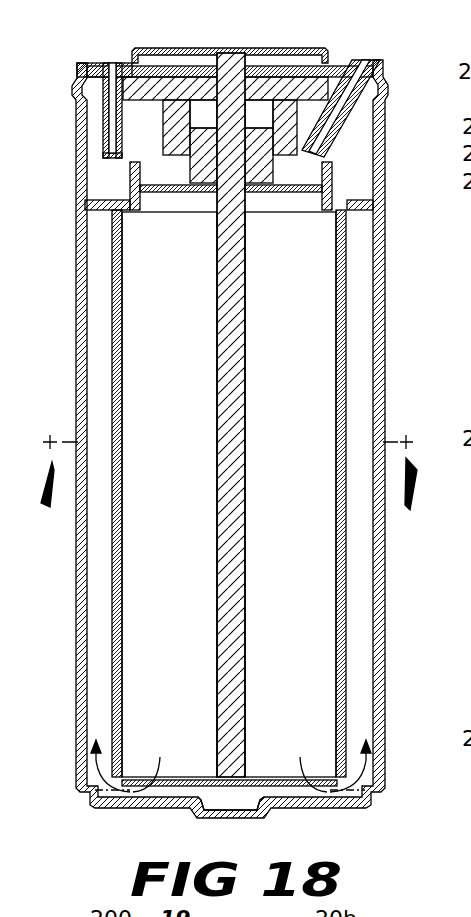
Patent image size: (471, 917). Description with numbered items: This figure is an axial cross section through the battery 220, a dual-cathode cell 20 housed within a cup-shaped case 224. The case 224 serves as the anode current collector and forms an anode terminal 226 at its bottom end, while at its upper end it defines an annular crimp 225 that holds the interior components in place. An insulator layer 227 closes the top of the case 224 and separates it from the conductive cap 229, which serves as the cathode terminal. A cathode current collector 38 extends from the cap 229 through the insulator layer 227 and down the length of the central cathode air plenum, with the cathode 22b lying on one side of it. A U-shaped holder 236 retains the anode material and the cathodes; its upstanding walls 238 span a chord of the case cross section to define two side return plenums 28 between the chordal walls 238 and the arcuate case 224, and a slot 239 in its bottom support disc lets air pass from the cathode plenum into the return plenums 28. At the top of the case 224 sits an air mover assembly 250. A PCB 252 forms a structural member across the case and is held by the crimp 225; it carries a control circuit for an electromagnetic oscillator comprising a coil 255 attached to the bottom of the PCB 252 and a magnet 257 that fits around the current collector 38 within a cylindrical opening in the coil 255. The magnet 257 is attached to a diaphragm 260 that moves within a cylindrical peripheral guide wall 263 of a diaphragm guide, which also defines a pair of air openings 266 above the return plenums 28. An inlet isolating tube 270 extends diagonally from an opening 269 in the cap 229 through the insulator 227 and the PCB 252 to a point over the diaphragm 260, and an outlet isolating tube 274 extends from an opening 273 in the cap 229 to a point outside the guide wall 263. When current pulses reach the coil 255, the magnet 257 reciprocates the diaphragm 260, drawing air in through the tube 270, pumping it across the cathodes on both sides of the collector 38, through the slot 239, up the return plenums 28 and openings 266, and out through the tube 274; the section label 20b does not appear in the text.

The battery 220 is at (432, 30).
The case 224 is at (383, 648).
The annular crimp 225 is at (80, 94).
The anode terminal 226 is at (250, 815).
The insulator layer 227 is at (385, 76).
The conductive cap 229 is at (318, 47).
The U-shaped holder 236 is at (108, 635).
The upstanding walls 238 is at (112, 695).
The slot 239 is at (178, 782).
The air mover assembly 250 is at (358, 160).
The PCB 252 is at (190, 76).
The coil 255 is at (292, 182).
The magnet 257 is at (250, 193).
The diaphragm 260 is at (178, 193).
The cylindrical peripheral guide wall 263 is at (130, 176).
The air openings 266 is at (100, 205).
The opening 269 is at (362, 62).
The inlet isolating tube 270 is at (340, 125).
The opening 273 is at (113, 62).
The outlet isolating tube 274 is at (105, 140).
The side return plenums 28 is at (100, 350).
The cathode 22b is at (316, 438).
The cathode current collector 38 is at (235, 60).
The cell 20 is at (233, 497).
The cell 20b is at (314, 568).